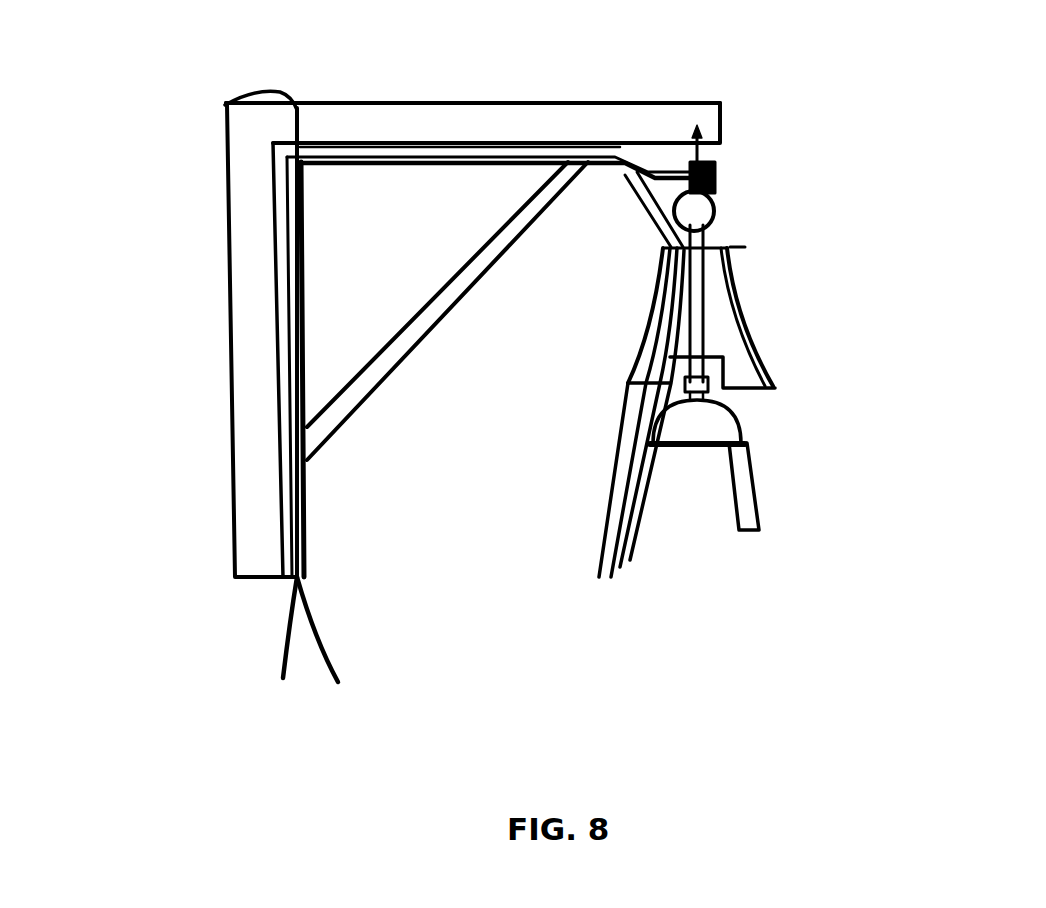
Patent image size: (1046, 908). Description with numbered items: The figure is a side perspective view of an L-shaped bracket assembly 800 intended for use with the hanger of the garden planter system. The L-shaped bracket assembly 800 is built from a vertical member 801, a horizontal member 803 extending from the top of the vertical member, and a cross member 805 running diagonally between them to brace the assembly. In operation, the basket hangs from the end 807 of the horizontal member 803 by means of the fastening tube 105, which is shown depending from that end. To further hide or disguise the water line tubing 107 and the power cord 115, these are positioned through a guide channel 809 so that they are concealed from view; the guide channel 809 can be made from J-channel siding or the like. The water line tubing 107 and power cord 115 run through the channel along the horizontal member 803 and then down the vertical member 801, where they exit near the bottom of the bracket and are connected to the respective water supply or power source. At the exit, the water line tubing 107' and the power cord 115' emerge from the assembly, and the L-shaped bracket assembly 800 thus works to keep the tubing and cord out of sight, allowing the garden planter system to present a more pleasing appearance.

The L-shaped bracket assembly 800 is at (940, 763).
The vertical member 801 is at (253, 483).
The horizontal member 803 is at (417, 102).
The cross member 805 is at (413, 355).
The end of the horizontal member 807 is at (720, 129).
The guide channel 809 is at (225, 105).
The power cord 115 is at (614, 367).
The power cord 115' is at (224, 687).
The water line tubing 107 is at (734, 378).
The water line tubing 107' is at (352, 681).
The fastening tube 105 is at (597, 505).